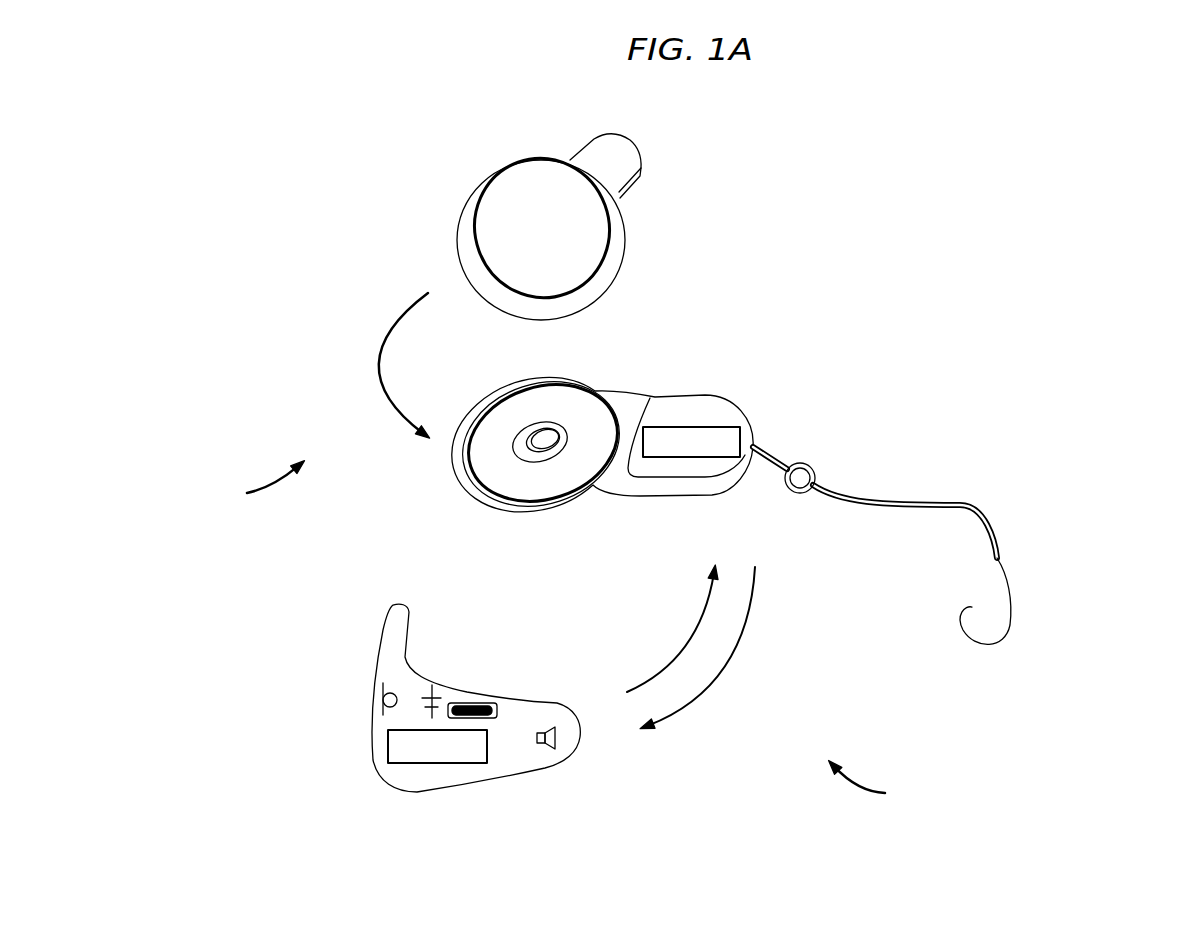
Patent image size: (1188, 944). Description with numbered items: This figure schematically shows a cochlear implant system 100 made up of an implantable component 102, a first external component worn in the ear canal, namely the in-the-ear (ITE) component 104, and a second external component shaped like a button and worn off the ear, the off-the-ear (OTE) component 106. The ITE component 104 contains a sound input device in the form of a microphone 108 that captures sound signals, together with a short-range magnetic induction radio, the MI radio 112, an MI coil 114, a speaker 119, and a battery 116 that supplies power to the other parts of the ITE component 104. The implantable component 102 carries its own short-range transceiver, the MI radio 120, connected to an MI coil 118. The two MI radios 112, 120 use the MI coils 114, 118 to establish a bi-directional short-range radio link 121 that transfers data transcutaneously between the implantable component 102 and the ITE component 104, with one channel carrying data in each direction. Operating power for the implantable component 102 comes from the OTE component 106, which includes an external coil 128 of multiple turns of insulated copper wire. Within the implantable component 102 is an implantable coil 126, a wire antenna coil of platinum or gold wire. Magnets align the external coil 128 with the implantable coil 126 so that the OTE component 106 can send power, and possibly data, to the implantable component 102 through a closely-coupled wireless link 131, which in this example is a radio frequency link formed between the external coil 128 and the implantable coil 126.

The cochlear implant system 100 is at (1081, 155).
The implantable component 102 is at (760, 476).
The in-the-ear (ITE) component 104 is at (460, 745).
The off-the-ear (OTE) component 106 is at (723, 369).
The microphone 108 is at (377, 696).
The MI radio 112 is at (388, 750).
The MI coil 114 is at (468, 703).
The battery 116 is at (435, 688).
The MI coil 118 is at (817, 467).
The speaker 119 is at (557, 734).
The MI radio 120 is at (720, 427).
The short-range radio link 121 is at (875, 786).
The implantable RF coil 126 is at (502, 495).
The external coil 128 is at (1073, 588).
The closely-coupled wireless link 131 is at (258, 487).